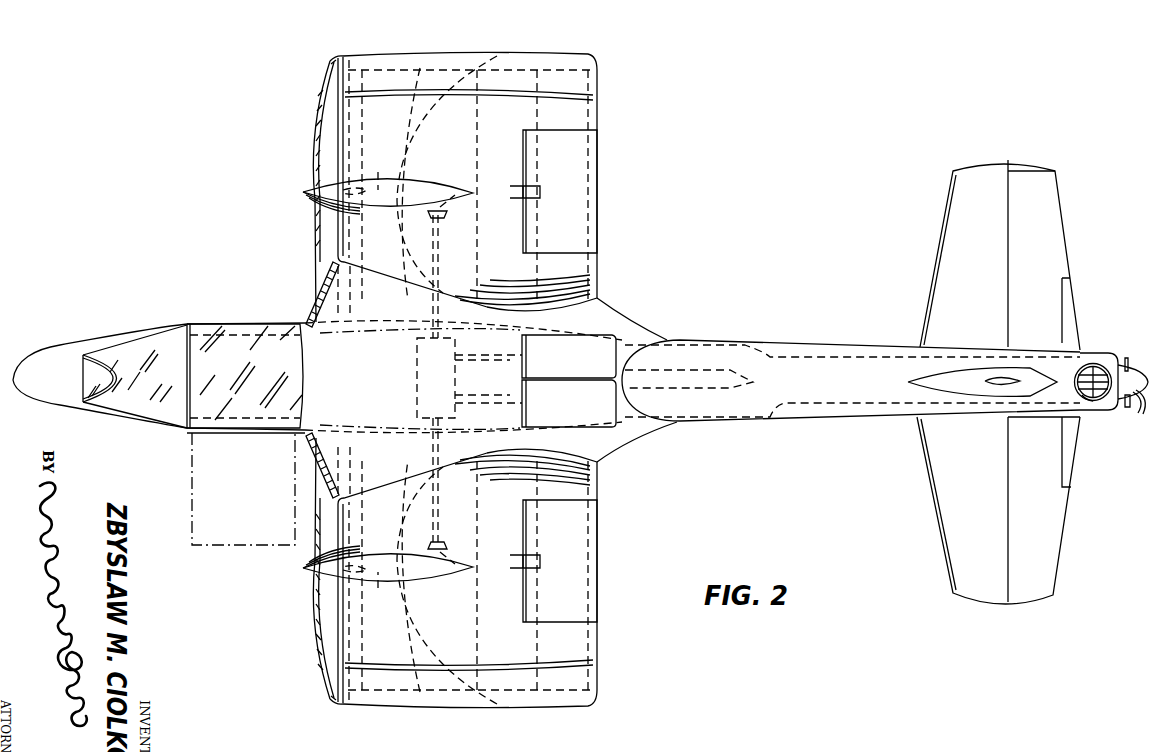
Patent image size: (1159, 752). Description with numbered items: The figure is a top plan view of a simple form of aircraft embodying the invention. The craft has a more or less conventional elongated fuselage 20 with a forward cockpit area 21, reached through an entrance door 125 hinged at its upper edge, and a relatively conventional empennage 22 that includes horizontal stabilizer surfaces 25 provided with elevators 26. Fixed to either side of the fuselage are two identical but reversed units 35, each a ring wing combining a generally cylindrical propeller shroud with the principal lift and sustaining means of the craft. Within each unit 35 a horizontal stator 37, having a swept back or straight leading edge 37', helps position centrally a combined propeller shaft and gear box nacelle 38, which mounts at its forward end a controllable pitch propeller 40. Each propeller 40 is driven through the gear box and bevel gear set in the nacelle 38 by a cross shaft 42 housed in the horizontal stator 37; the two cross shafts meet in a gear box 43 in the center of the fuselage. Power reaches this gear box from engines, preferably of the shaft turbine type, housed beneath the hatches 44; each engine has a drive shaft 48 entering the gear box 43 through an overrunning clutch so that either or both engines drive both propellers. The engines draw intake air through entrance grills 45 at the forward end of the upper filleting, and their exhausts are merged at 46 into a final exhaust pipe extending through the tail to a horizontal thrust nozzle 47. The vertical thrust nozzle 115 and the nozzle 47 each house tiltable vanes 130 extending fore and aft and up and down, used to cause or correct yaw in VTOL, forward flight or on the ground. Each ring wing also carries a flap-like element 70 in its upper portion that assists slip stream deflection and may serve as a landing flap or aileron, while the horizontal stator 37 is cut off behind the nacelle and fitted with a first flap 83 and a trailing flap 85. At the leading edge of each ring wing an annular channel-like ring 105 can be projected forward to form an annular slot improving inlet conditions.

The fuselage 20 is at (781, 341).
The forward cockpit area 21 is at (56, 390).
The empennage 22 is at (906, 322).
The horizontal stabilizer surfaces 25 is at (979, 286).
The elevators 26 is at (1047, 286).
The ring wing unit 35 is at (310, 98).
The horizontal stator 37 is at (475, 387).
The leading edge of horizontal stator 37' is at (397, 380).
The propeller shaft and gear box nacelle 38 is at (379, 386).
The controllable pitch propeller 40 is at (312, 200).
The cross shaft 42 is at (440, 256).
The gear box 43 is at (417, 380).
The hatches 44 is at (579, 368).
The entrance grills 45 is at (316, 308).
The merged exhausts 46 is at (857, 388).
The horizontal thrust nozzle 47 is at (1123, 410).
The drive shaft 48 is at (508, 362).
The flap-like element 70 is at (576, 571).
The first flap 83 is at (508, 104).
The trailing flap 85 is at (565, 102).
The annular channel-like ring 105 is at (338, 72).
The vertical thrust nozzle 115 is at (1093, 400).
The entrance door 125 is at (228, 545).
The vanes 130 is at (1097, 365).